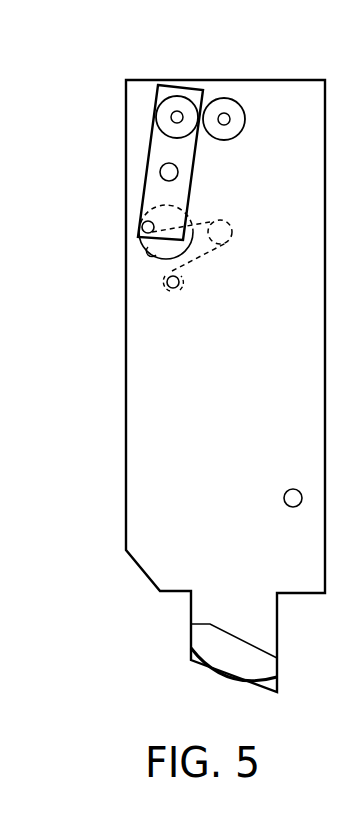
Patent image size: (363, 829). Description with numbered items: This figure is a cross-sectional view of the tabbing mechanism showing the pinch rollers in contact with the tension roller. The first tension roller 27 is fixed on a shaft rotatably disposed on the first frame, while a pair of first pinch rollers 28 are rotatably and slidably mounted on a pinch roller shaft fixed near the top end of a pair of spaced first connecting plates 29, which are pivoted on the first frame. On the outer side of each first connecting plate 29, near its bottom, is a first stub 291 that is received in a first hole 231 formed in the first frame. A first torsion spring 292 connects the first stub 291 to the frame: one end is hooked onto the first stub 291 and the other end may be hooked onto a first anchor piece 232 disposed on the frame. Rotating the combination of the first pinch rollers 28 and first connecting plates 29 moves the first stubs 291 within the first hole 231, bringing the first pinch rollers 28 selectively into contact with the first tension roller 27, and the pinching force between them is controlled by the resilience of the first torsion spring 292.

The first tension roller 27 is at (228, 110).
The first pinch rollers 28 is at (169, 108).
The first connecting plates 29 is at (158, 156).
The first stub 291 is at (140, 223).
The first torsion spring 292 is at (222, 218).
The first hole 231 is at (152, 258).
The first anchor piece 232 is at (176, 290).